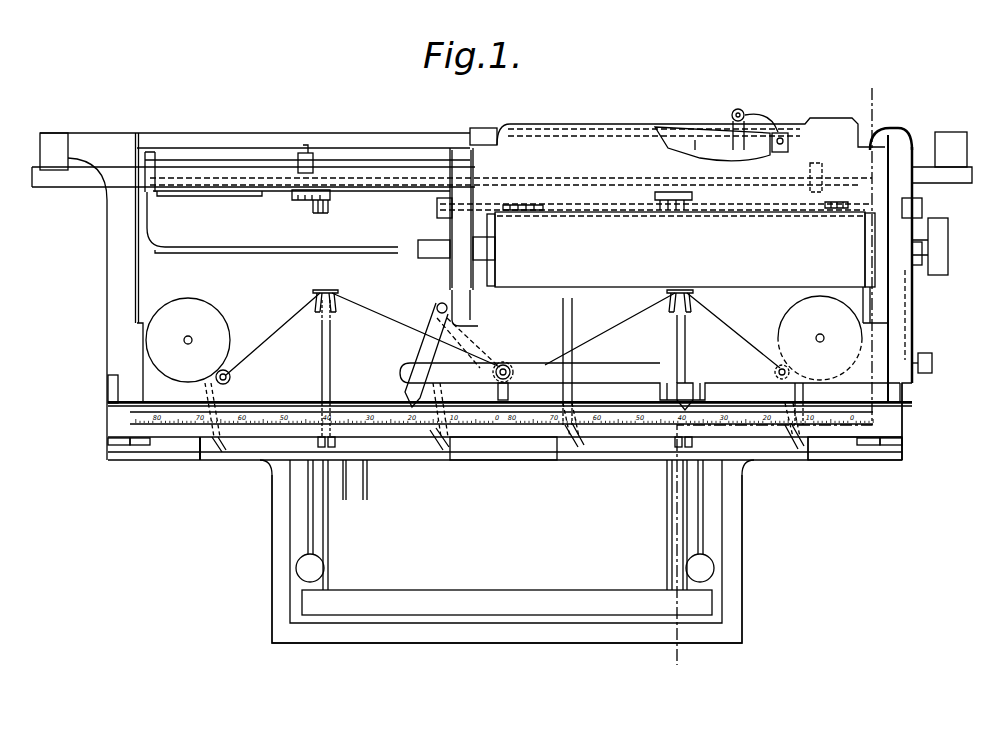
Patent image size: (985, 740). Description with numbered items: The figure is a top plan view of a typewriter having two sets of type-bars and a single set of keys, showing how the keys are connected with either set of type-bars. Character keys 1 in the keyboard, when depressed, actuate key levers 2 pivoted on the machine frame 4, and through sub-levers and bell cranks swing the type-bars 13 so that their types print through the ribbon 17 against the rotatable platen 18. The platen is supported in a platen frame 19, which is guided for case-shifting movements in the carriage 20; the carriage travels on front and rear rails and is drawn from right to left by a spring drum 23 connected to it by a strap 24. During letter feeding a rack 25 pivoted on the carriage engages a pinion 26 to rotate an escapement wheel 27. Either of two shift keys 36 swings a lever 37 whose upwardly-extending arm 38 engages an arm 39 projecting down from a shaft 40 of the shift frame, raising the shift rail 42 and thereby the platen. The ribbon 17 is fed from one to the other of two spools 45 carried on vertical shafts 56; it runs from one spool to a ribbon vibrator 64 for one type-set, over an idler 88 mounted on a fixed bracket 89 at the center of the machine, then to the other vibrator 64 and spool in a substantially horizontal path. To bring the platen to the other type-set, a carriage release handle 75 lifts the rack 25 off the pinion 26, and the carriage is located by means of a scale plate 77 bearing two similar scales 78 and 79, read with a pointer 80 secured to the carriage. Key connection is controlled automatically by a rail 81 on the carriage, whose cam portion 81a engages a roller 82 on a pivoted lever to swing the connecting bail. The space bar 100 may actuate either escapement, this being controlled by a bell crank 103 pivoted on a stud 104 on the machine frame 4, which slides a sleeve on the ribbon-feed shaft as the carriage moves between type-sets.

The character keys 1 is at (508, 574).
The key levers 2 is at (865, 104).
The machine frame 4 is at (272, 525).
The type-bars 13 is at (322, 376).
The ribbon 17 is at (287, 332).
The platen 18 is at (528, 286).
The platen frame 19 is at (578, 124).
The carriage 20 is at (130, 140).
The spring drum 23 is at (174, 197).
The strap 24 is at (270, 194).
The rack 25 is at (836, 205).
The pinion 26 is at (320, 214).
The escapement wheel 27 is at (332, 199).
The shift keys 36 is at (505, 568).
The lever 37 is at (312, 510).
The upwardly-extending arm 38 is at (306, 146).
The arm 39 is at (320, 158).
The shaft 40 is at (212, 158).
The shift rail 42 is at (236, 257).
The ribbon spools 45 is at (186, 302).
The vertical shafts 56 is at (184, 341).
The ribbon vibrators 64 is at (330, 290).
The carriage release handle 75 is at (932, 363).
The scale plate 77 is at (897, 422).
The scale 78 is at (638, 416).
The scale 79 is at (272, 415).
The pointer 80 is at (688, 394).
The rail 81 is at (686, 133).
The cam portion 81a is at (902, 132).
The roller 82 is at (741, 110).
The idler 88 is at (510, 366).
The fixed bracket 89 is at (508, 393).
The space bar 100 is at (507, 603).
The bell crank 103 is at (775, 120).
The stud 104 is at (790, 143).